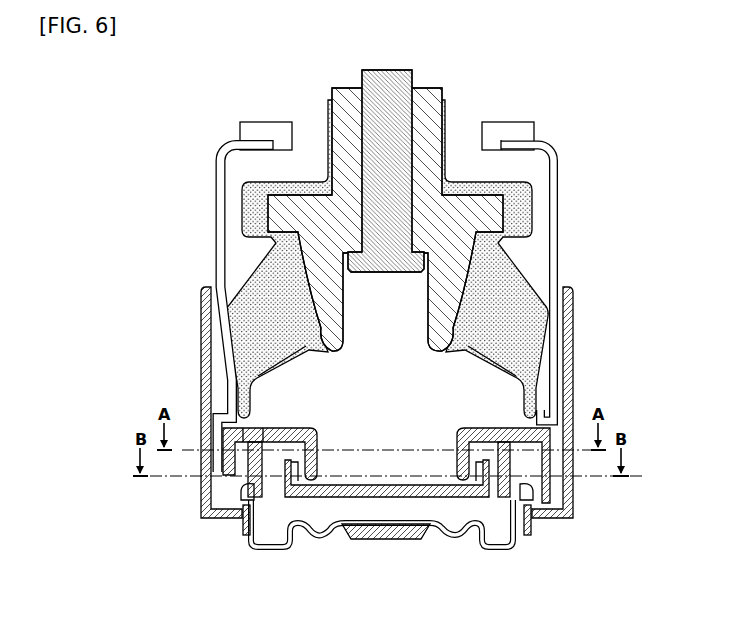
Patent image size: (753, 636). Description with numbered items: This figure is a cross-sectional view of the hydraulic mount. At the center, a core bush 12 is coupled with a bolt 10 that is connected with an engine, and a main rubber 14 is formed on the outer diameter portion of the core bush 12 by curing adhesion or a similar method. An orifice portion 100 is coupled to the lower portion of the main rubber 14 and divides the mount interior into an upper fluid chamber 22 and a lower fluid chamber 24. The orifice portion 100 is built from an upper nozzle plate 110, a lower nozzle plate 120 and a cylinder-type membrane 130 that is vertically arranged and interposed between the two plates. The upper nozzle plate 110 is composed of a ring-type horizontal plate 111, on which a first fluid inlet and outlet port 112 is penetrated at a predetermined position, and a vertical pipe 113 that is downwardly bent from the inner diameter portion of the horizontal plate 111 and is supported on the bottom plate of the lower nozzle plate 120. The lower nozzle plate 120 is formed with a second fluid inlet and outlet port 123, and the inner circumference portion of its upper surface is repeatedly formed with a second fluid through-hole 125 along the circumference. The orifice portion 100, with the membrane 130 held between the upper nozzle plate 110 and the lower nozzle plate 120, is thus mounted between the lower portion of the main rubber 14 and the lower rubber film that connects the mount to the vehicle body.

The bolt 10 is at (412, 72).
The core bush 12 is at (428, 125).
The main rubber 14 is at (500, 275).
The upper fluid chamber 22 is at (481, 381).
The lower fluid chamber 24 is at (282, 513).
The orifice portion 100 is at (514, 409).
The upper nozzle plate 110 is at (292, 426).
The horizontal plate 111 is at (262, 431).
The first fluid inlet and outlet port 112 is at (246, 431).
The vertical pipe 113 is at (310, 470).
The lower nozzle plate 120 is at (373, 499).
The second fluid inlet and outlet port 123 is at (524, 500).
The second fluid through-hole 125 is at (245, 530).
The membrane 130 is at (480, 424).